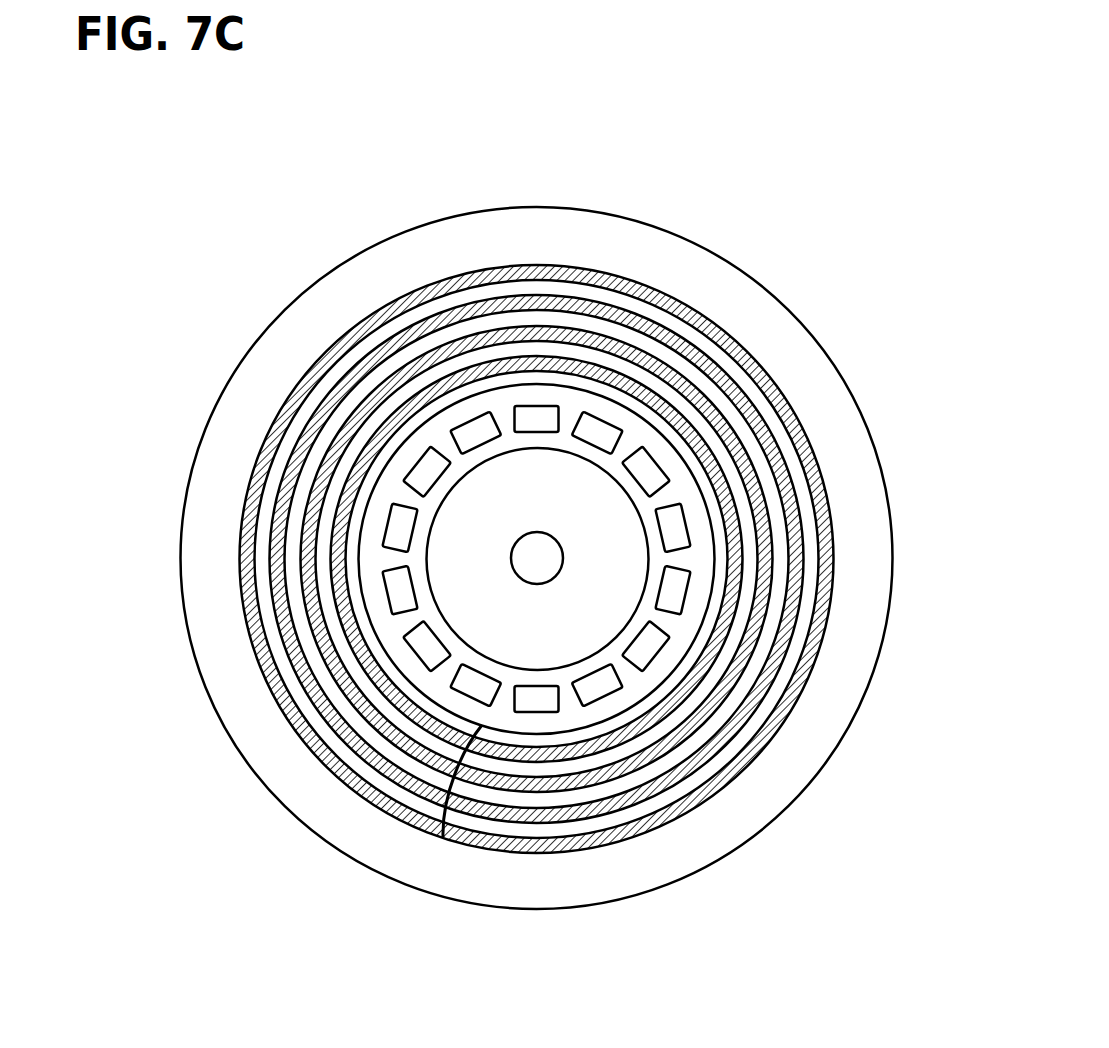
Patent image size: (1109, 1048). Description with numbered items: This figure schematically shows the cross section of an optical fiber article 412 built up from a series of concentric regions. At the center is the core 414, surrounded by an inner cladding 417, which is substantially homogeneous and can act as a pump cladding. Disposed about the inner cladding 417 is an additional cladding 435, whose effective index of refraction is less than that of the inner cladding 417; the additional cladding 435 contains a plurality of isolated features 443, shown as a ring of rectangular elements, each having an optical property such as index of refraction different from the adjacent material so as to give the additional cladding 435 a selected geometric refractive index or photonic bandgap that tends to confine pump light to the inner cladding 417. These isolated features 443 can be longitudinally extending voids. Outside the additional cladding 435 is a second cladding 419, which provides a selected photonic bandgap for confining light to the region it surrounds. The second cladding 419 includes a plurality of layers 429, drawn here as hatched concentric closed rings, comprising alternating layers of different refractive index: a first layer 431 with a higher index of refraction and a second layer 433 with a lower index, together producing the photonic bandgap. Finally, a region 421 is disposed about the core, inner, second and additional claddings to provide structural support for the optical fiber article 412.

The optical fiber article 412 is at (318, 222).
The core 414 is at (538, 551).
The inner cladding 417 is at (575, 636).
The second cladding 419 is at (785, 715).
The region 421 is at (695, 847).
The plurality of layers 429 is at (447, 773).
The first layer 431 is at (832, 523).
The second layer 433 is at (785, 442).
The additional cladding 435 is at (503, 702).
The isolated features 443 is at (422, 477).